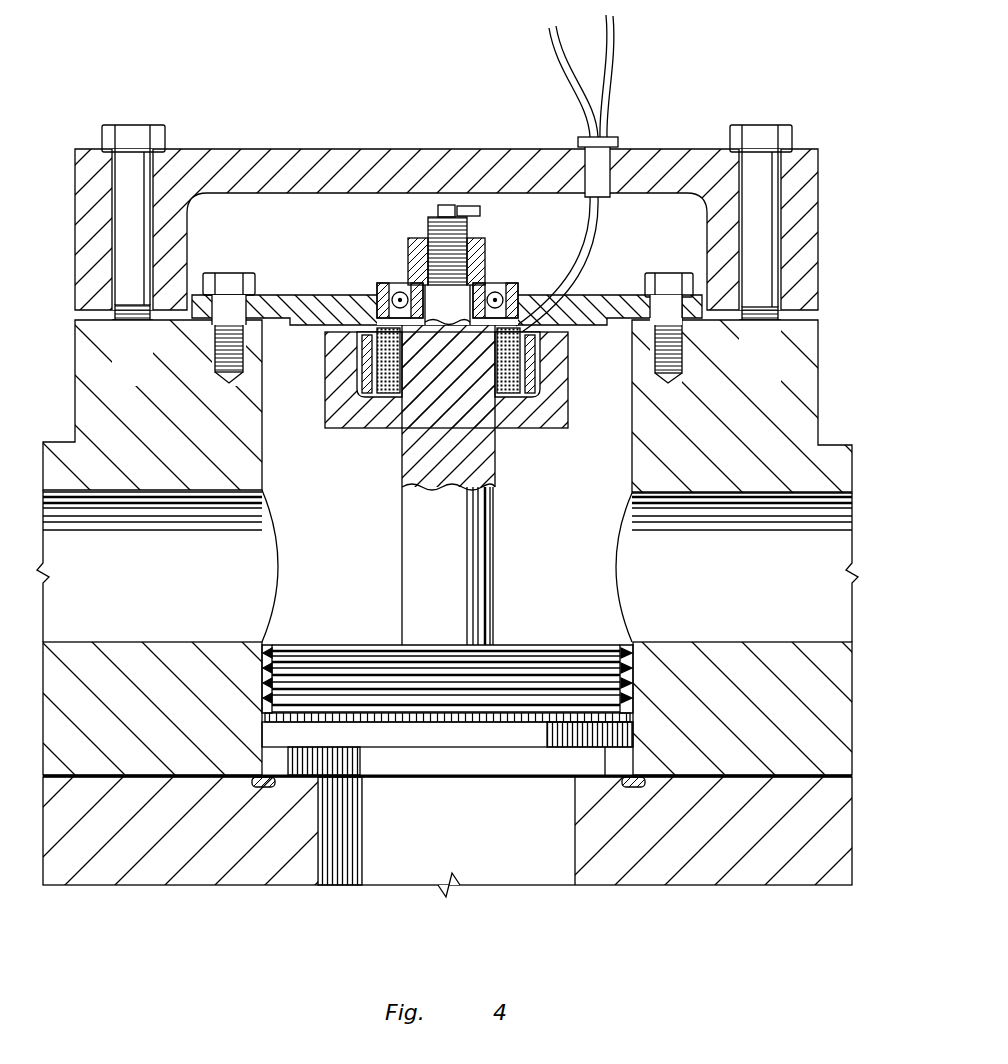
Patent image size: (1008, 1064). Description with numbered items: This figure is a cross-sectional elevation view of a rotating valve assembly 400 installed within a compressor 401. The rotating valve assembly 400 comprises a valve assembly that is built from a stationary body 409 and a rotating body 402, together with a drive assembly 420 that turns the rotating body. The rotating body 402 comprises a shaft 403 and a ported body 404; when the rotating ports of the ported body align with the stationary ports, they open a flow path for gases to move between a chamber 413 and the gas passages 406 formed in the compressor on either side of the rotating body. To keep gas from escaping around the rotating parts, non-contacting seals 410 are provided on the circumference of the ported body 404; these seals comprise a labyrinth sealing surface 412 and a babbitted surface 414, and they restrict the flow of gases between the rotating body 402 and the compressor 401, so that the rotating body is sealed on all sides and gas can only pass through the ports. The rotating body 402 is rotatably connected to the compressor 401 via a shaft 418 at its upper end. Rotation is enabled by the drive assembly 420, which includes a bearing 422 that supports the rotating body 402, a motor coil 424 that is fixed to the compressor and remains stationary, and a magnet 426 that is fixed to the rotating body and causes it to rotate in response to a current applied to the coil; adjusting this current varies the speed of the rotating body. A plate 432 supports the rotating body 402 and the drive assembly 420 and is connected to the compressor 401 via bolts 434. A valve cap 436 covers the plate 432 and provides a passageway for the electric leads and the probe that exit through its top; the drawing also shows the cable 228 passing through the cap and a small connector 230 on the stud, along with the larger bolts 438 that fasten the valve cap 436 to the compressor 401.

The rotating valve assembly 400 is at (485, 120).
The compressor 401 is at (826, 350).
The rotating body 402 is at (397, 580).
The shaft 403 is at (496, 566).
The ported body 404 is at (453, 658).
The gas passages 406 is at (187, 578).
The stationary body 409 is at (452, 733).
The non-contacting seals 410 is at (636, 690).
The labyrinth sealing surface 412 is at (268, 680).
The chamber 413 is at (491, 876).
The babbitted surface 414 is at (268, 643).
The shaft 418 is at (438, 240).
The drive assembly 420 is at (458, 422).
The bearing 422 is at (496, 292).
The motor coil 424 is at (514, 355).
The magnet 426 is at (530, 380).
The plate 432 is at (345, 294).
The bolts 434 is at (229, 272).
The valve cap 436 is at (302, 147).
The bolt 438 is at (135, 137).
The cable 228 is at (612, 108).
The connector 230 is at (484, 211).